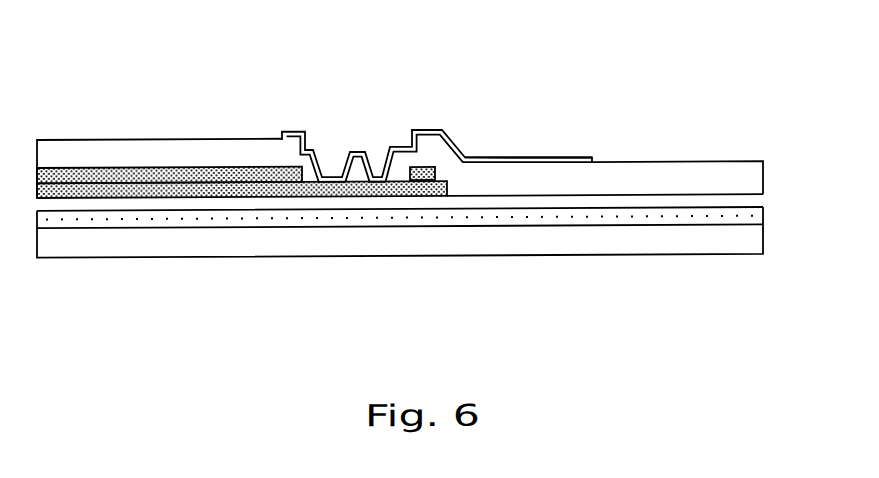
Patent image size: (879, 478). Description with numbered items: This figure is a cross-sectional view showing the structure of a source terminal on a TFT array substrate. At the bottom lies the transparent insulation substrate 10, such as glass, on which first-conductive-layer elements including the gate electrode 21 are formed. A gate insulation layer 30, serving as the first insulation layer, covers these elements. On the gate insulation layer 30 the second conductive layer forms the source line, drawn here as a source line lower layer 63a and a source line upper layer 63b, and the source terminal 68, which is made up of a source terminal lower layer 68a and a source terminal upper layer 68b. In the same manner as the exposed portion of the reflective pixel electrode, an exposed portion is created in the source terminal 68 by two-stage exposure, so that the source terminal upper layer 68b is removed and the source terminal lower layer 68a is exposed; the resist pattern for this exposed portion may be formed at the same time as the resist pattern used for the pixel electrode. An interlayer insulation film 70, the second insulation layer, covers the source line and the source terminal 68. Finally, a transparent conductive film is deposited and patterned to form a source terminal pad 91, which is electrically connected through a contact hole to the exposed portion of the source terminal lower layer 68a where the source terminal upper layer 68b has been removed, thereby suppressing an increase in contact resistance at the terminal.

The transparent insulation substrate 10 is at (413, 239).
The gate electrode 21 is at (537, 228).
The gate insulation layer 30 is at (755, 205).
The source line lower layer 63a is at (103, 198).
The source line upper layer 63b is at (110, 168).
The source terminal 68 is at (346, 105).
The source terminal lower layer 68a is at (345, 198).
The source terminal upper layer 68b is at (280, 169).
The interlayer insulation film 70 is at (750, 179).
The source terminal pad 91 is at (520, 160).